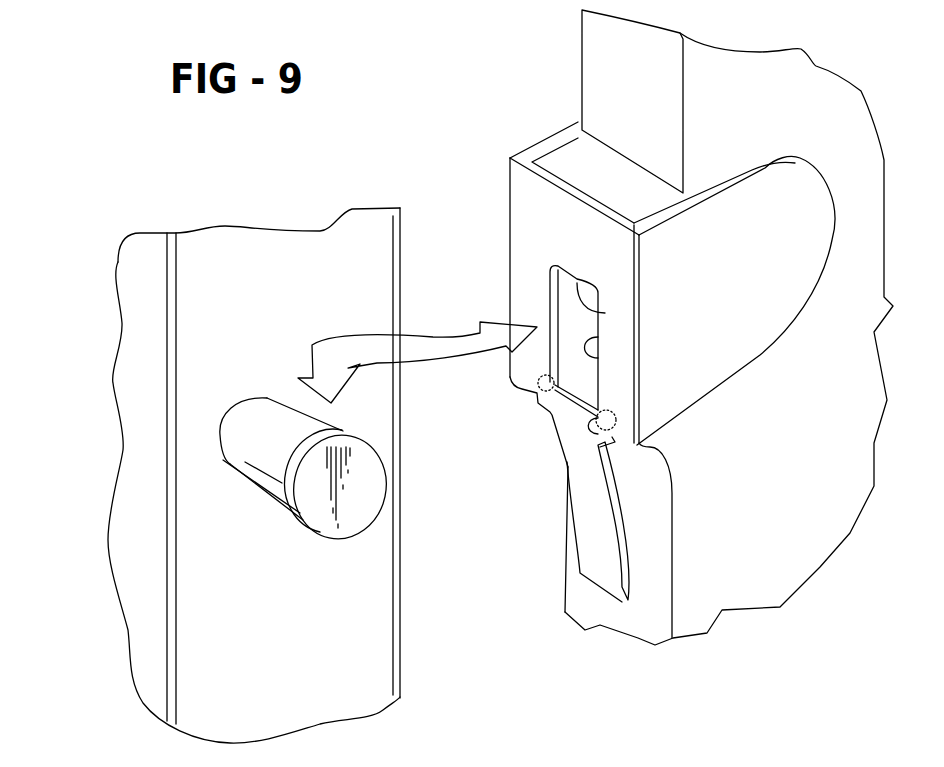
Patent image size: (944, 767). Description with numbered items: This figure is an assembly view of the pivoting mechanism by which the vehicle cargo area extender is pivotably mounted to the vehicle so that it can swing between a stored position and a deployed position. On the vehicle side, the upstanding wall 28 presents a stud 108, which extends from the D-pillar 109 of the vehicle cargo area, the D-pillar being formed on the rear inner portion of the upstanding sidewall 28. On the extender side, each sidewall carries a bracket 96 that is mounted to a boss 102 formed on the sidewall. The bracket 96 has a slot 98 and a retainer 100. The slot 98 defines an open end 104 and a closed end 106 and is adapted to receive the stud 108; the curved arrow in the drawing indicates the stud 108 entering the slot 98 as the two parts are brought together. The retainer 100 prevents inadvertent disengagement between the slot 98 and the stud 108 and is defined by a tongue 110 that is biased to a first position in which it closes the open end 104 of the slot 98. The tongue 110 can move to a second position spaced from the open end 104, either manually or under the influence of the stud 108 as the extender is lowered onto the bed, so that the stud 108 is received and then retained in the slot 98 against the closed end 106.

The upstanding wall 28 is at (152, 368).
The bracket 96 is at (525, 193).
The slot 98 is at (600, 358).
The retainer 100 is at (569, 543).
The boss 102 is at (593, 178).
The open end 104 is at (613, 433).
The closed end 106 is at (605, 313).
The stud 108 is at (267, 430).
The D-pillar 109 is at (338, 573).
The tongue 110 is at (597, 502).